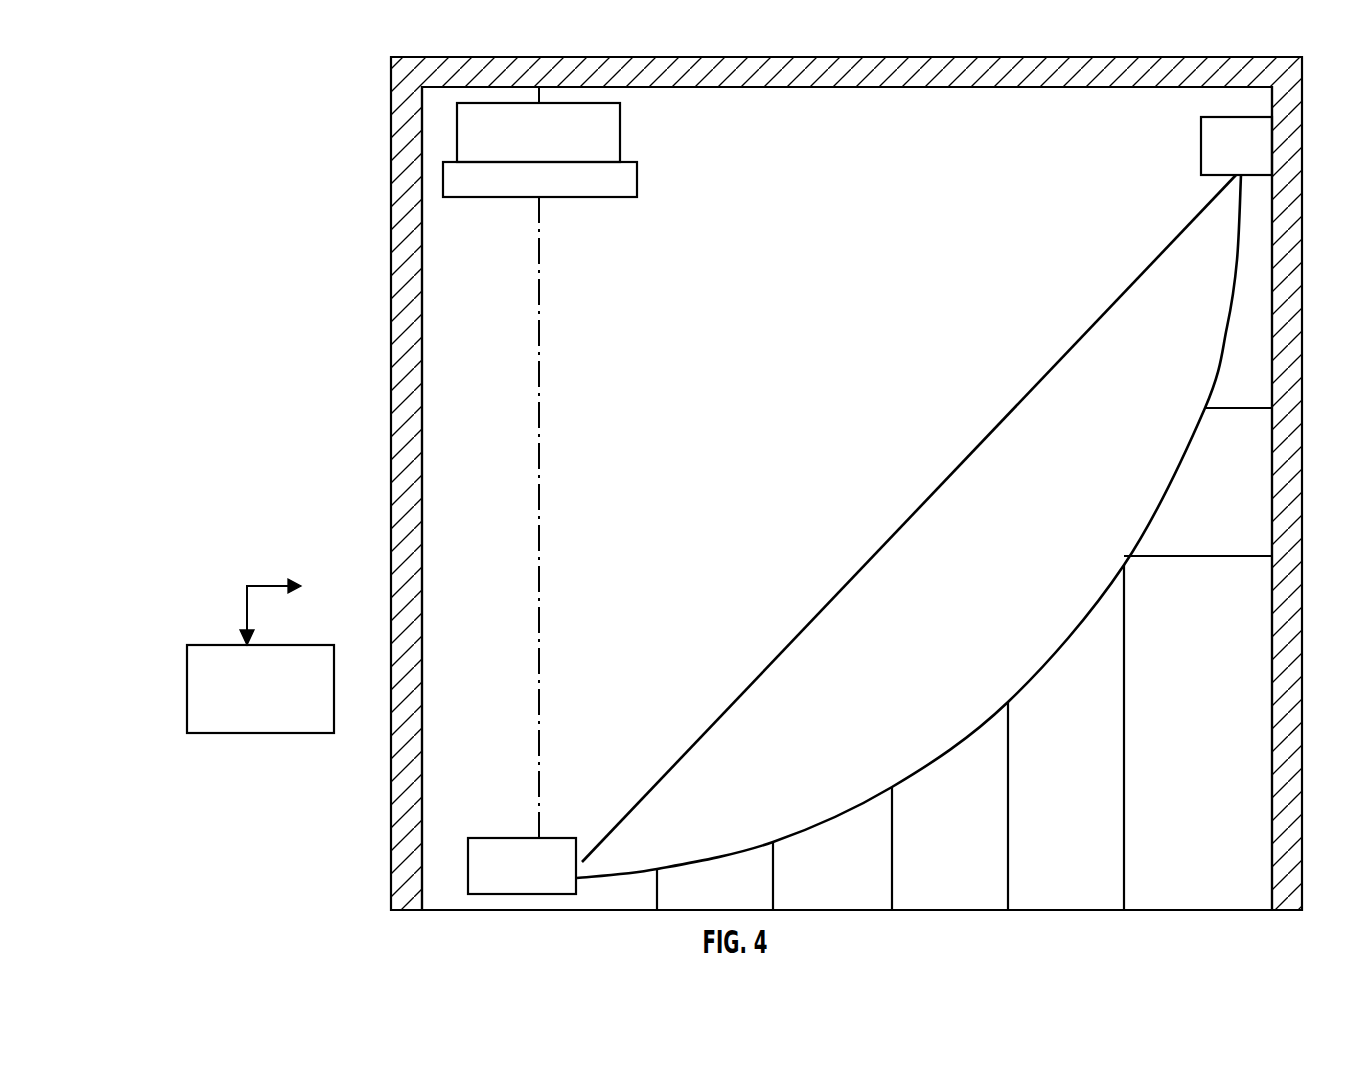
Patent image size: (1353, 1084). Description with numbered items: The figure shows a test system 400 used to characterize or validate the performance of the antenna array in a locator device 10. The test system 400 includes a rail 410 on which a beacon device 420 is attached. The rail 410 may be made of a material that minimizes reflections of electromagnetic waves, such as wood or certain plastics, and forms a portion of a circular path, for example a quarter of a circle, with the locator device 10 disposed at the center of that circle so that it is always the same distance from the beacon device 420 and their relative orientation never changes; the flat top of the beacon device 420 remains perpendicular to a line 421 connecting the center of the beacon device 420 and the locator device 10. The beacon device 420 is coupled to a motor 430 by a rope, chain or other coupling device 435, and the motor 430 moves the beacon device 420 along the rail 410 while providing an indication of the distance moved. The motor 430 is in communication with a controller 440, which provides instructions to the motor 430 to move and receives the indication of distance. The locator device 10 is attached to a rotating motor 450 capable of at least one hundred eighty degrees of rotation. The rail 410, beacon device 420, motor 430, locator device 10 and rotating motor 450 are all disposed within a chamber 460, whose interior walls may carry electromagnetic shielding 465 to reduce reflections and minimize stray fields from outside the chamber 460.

The test system 400 is at (204, 114).
The chamber 460 is at (391, 245).
The electromagnetic shielding 465 is at (422, 405).
The rotating motor 450 is at (521, 156).
The locator device 10 is at (605, 191).
The motor 430 is at (1221, 169).
The coupling device 435 is at (1173, 236).
The beacon device 420 is at (538, 888).
The line 421 is at (538, 668).
The rail 410 is at (827, 820).
The controller 440 is at (243, 722).